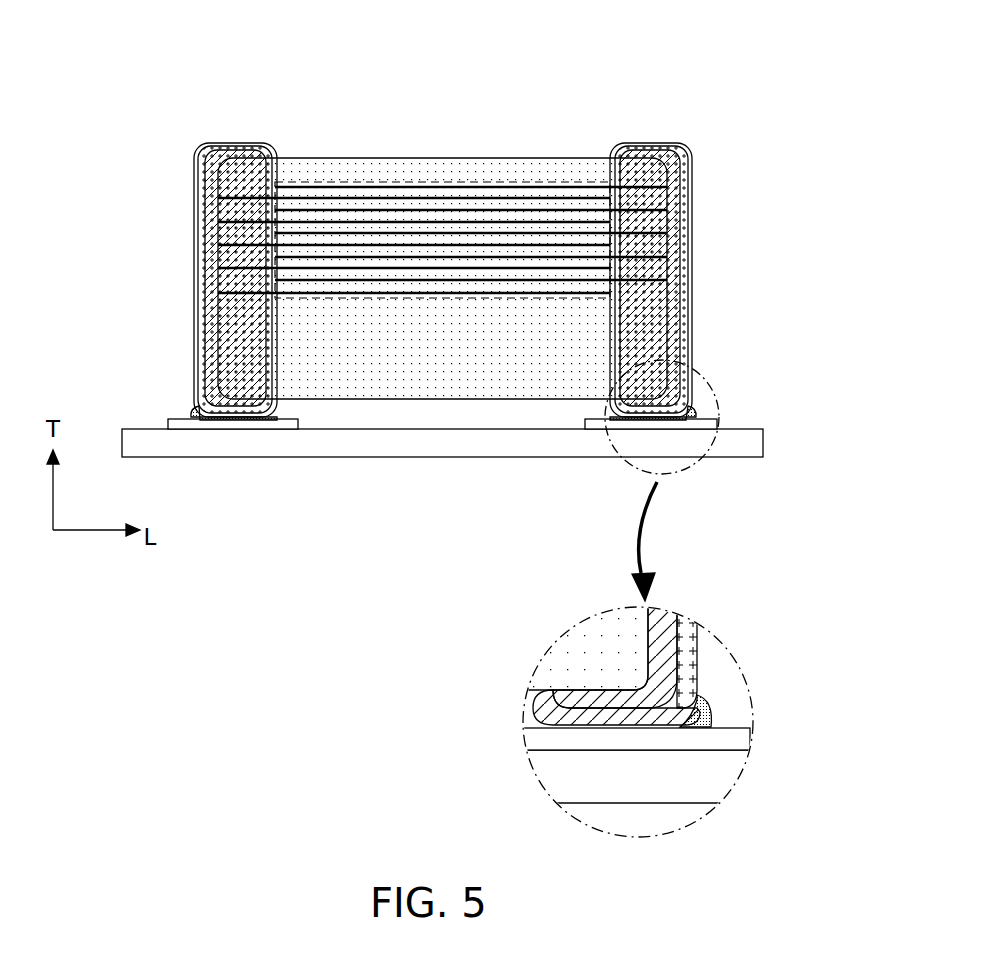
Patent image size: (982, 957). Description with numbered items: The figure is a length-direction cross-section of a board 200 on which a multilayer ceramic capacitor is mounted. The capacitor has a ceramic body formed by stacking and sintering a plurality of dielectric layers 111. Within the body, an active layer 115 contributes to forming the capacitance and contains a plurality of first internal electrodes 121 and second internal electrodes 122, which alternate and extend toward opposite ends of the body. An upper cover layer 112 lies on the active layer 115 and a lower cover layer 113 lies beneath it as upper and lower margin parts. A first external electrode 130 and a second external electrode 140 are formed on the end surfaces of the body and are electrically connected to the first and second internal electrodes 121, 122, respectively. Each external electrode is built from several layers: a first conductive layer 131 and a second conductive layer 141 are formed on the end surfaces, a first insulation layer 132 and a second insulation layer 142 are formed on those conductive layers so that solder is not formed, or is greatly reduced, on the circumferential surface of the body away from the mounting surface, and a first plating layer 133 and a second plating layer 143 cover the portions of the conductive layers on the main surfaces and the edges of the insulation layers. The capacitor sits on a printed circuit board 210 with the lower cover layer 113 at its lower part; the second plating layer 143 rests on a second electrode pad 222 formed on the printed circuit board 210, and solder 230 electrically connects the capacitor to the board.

The board having a multilayer ceramic capacitor mounted thereon 200 is at (423, 54).
The dielectric layer 111 is at (603, 204).
The upper cover layer 112 is at (442, 173).
The lower cover layer 113 is at (443, 388).
The active layer 115 is at (541, 170).
The first internal electrode 121 is at (235, 195).
The second internal electrode 122 is at (652, 185).
The first external electrode 130 is at (169, 280).
The first conductive layer 131 is at (112, 398).
The first insulation layer 132 is at (201, 342).
The first plating layer 133 is at (197, 413).
The second external electrode 140 is at (704, 434).
The second conductive layer 141 is at (772, 398).
The second insulation layer 142 is at (685, 343).
The second plating layer 143 is at (694, 406).
The printed circuit board 210 is at (745, 443).
The second electrode pad 222 is at (257, 423).
The solder 230 is at (195, 418).